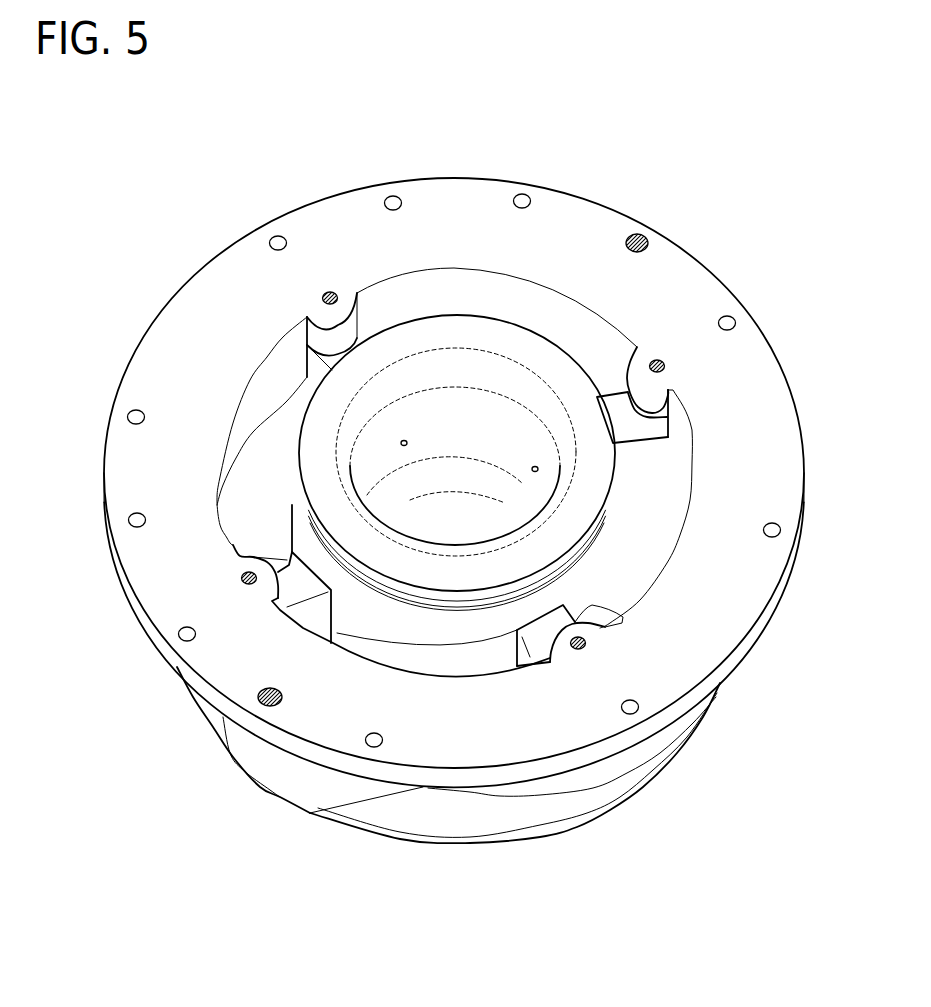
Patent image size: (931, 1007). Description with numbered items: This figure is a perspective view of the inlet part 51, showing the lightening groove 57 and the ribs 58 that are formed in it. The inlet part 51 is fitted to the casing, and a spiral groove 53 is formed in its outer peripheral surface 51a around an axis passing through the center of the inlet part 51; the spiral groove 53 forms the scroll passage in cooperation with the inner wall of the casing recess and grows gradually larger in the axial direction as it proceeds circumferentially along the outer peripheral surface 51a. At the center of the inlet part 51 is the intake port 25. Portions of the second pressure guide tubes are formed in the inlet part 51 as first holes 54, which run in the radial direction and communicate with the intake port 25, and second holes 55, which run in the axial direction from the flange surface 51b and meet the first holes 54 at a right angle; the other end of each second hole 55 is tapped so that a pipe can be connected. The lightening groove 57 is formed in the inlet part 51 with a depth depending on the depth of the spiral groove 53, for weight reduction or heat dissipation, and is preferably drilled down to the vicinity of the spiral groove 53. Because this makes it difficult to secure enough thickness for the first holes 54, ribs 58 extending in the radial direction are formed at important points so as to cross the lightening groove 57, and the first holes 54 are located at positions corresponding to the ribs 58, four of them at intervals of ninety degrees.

The intake port 25 is at (472, 423).
The inlet part 51 is at (155, 317).
The outer peripheral surface 51a is at (207, 713).
The flange surface 51b is at (753, 417).
The spiral groove 53 is at (577, 773).
The first hole 54 is at (407, 444).
The second hole 55 is at (330, 292).
The lightening groove 57 is at (270, 440).
The rib 58 is at (357, 337).